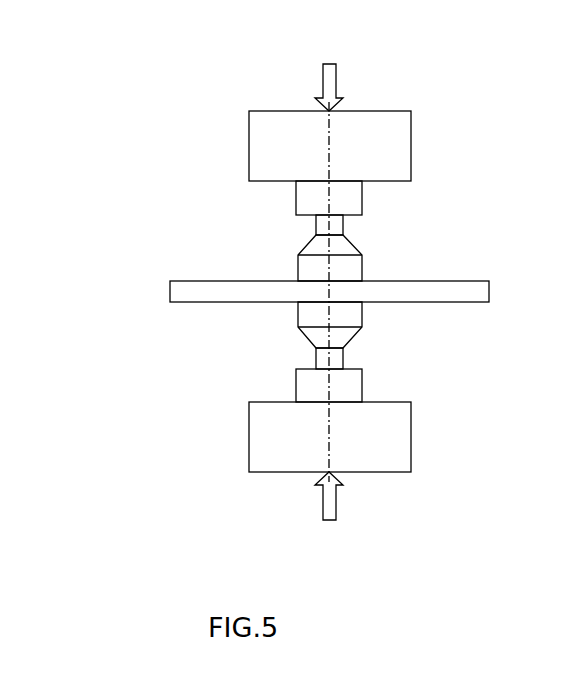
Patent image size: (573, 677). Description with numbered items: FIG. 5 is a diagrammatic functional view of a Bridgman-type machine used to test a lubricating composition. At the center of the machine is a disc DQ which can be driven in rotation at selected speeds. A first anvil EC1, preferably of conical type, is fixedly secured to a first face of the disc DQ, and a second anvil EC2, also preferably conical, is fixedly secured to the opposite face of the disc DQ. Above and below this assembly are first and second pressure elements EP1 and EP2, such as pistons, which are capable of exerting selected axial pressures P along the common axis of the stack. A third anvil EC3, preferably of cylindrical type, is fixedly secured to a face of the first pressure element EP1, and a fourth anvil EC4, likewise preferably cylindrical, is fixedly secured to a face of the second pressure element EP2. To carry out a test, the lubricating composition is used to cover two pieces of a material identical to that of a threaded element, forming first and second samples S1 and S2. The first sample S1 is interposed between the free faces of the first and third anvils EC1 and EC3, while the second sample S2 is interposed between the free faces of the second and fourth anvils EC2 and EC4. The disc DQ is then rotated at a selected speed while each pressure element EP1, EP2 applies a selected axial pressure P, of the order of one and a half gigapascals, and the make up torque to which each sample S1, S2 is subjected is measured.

The axial pressure P is at (329, 295).
The first pressure element EP1 is at (249, 156).
The second pressure element EP2 is at (249, 440).
The third anvil EC3 is at (296, 207).
The fourth anvil EC4 is at (296, 374).
The first anvil EC1 is at (298, 253).
The second anvil EC2 is at (302, 330).
The first sample S1 is at (343, 224).
The second sample S2 is at (343, 358).
The disc DQ is at (170, 300).